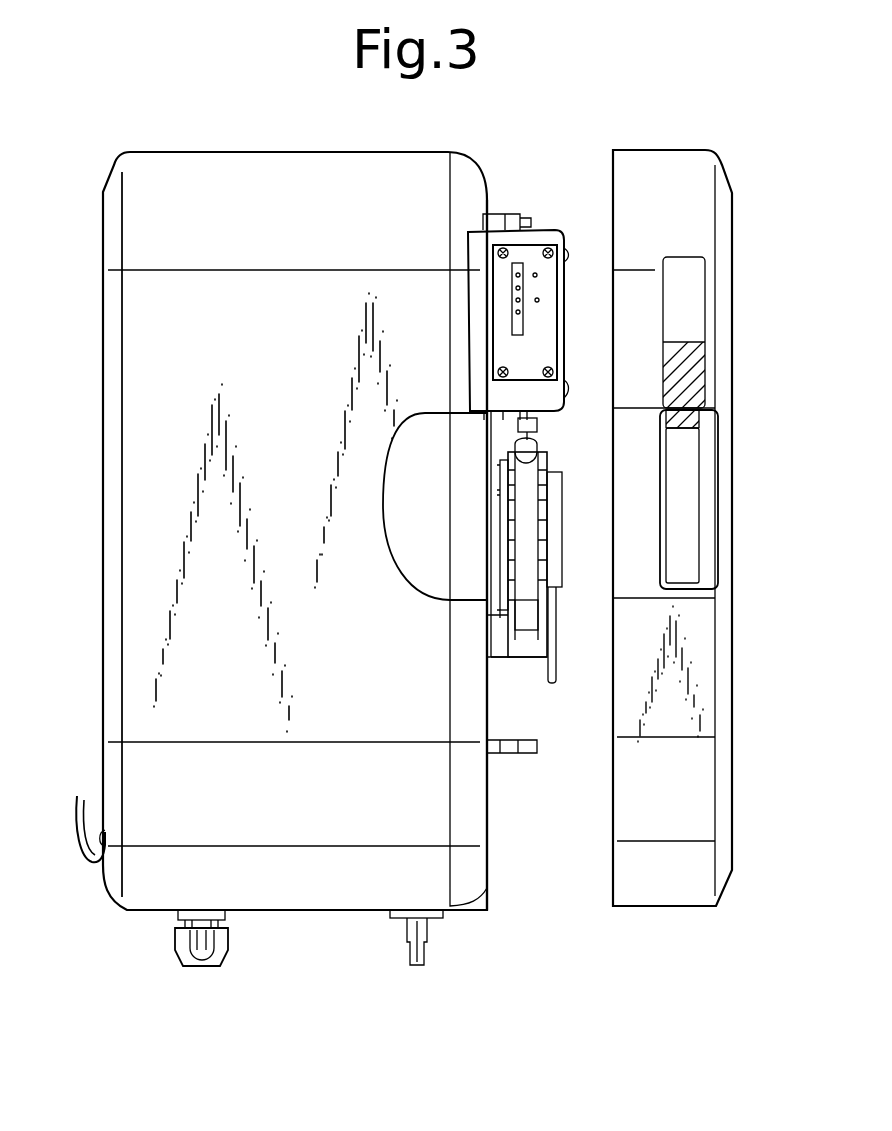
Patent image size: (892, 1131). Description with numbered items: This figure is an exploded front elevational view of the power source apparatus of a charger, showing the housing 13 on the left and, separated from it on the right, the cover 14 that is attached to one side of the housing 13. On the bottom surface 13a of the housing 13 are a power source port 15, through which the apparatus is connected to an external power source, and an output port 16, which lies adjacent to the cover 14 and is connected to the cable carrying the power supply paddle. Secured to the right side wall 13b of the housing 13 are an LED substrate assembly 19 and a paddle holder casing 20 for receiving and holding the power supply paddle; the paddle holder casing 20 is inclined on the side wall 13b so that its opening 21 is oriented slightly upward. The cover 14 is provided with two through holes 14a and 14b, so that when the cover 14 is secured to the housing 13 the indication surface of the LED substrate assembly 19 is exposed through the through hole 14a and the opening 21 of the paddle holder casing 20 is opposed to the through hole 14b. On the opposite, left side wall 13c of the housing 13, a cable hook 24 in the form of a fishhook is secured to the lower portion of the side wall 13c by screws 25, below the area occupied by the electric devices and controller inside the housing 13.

The housing 13 is at (354, 162).
The bottom surface 13a is at (323, 912).
The side wall 13b is at (490, 797).
The side wall 13c is at (100, 388).
The cover 14 is at (703, 182).
The through hole 14a is at (698, 298).
The through hole 14b is at (698, 521).
The power source port 15 is at (190, 960).
The output port 16 is at (420, 930).
The LED substrate assembly 19 is at (538, 240).
The paddle holder casing 20 is at (546, 616).
The opening 21 is at (532, 528).
The cable hook 24 is at (78, 820).
The screws 25 is at (100, 836).